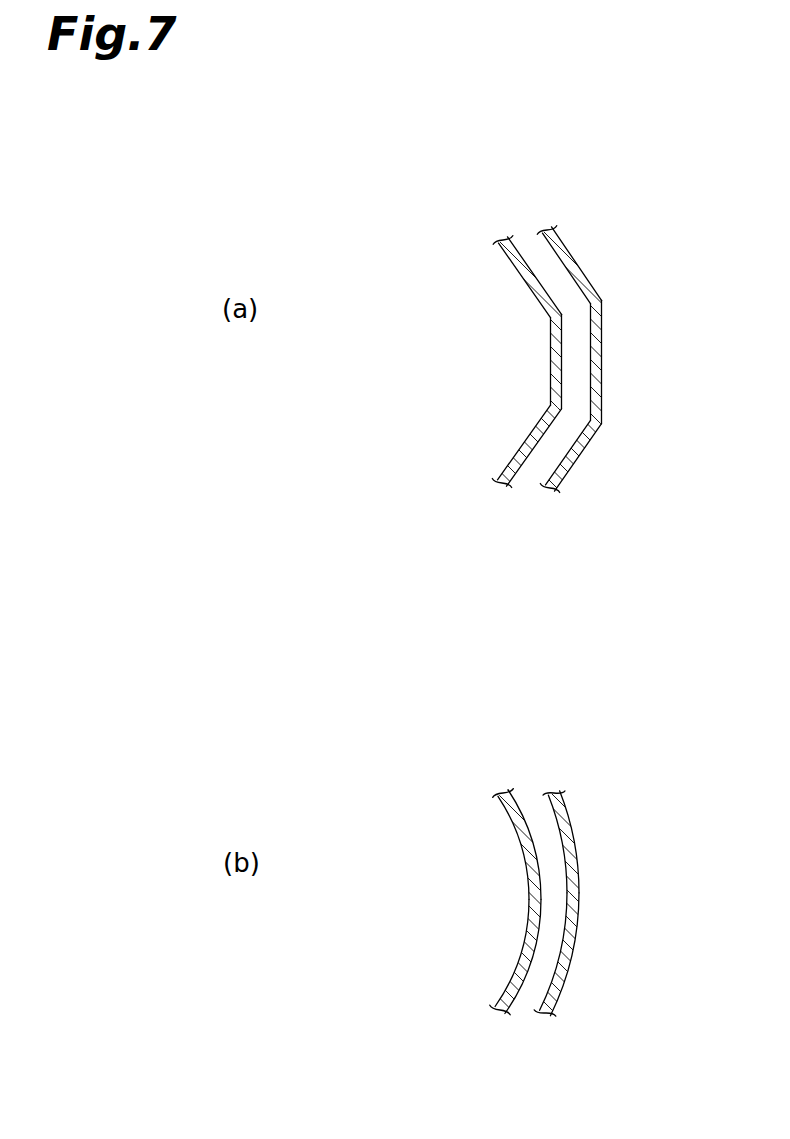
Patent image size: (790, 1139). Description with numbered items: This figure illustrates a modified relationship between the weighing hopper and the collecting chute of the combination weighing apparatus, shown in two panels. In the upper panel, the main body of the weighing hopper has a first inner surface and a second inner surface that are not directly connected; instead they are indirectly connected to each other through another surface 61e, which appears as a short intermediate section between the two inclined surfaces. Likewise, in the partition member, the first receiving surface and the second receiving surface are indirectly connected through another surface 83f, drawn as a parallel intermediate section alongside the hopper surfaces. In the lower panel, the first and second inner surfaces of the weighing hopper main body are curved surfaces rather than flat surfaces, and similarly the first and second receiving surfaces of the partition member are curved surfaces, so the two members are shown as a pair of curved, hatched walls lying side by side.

The another surface 61e is at (550, 358).
The another surface 83f is at (588, 350).